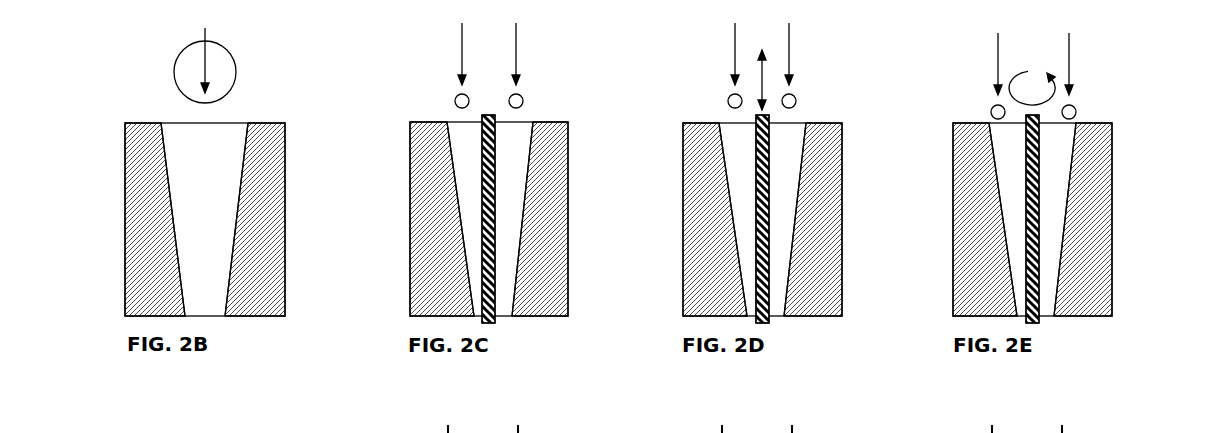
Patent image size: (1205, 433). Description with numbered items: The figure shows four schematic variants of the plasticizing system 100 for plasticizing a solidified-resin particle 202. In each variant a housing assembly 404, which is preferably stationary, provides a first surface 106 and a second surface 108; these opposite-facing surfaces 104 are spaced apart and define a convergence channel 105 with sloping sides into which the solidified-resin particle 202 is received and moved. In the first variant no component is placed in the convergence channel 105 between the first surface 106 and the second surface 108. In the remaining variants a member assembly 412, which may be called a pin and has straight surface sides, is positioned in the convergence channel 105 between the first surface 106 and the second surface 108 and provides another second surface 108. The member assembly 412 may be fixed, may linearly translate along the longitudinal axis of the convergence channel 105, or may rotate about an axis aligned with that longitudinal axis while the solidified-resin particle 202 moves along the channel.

In FIG. 2B, the plasticizing system 100 is at (75, 354).
In FIG. 2C, the plasticizing system 100 is at (358, 276).
In FIG. 2D, the plasticizing system 100 is at (623, 301).
In FIG. 2E, the plasticizing system 100 is at (896, 307).
In FIG. 2B, the opposite-facing surfaces 104 is at (75, 274).
In FIG. 2B, the convergence channel 105 is at (181, 132).
In FIG. 2C, the convergence channel 105 is at (460, 137).
In FIG. 2D, the convergence channel 105 is at (733, 137).
In FIG. 2E, the convergence channel 105 is at (1000, 148).
In FIG. 2B, the first surface 106 is at (170, 215).
In FIG. 2C, the first surface 106 is at (457, 211).
In FIG. 2D, the first surface 106 is at (733, 252).
In FIG. 2E, the first surface 106 is at (1000, 265).
In FIG. 2B, the second surface 108 is at (237, 241).
In FIG. 2C, the second surface 108 is at (478, 160).
In FIG. 2D, the second surface 108 is at (753, 158).
In FIG. 2E, the second surface 108 is at (1023, 158).
In FIG. 2B, the solidified-resin particle 202 is at (236, 68).
In FIG. 2C, the solidified-resin particle 202 is at (527, 103).
In FIG. 2D, the solidified-resin particle 202 is at (800, 102).
In FIG. 2E, the solidified-resin particle 202 is at (1078, 110).
In FIG. 2B, the housing assembly 404 is at (285, 218).
In FIG. 2C, the housing assembly 404 is at (568, 218).
In FIG. 2D, the housing assembly 404 is at (842, 218).
In FIG. 2E, the housing assembly 404 is at (1112, 218).
In FIG. 2C, the member assembly 412 is at (490, 325).
In FIG. 2D, the member assembly 412 is at (764, 325).
In FIG. 2E, the member assembly 412 is at (1034, 325).